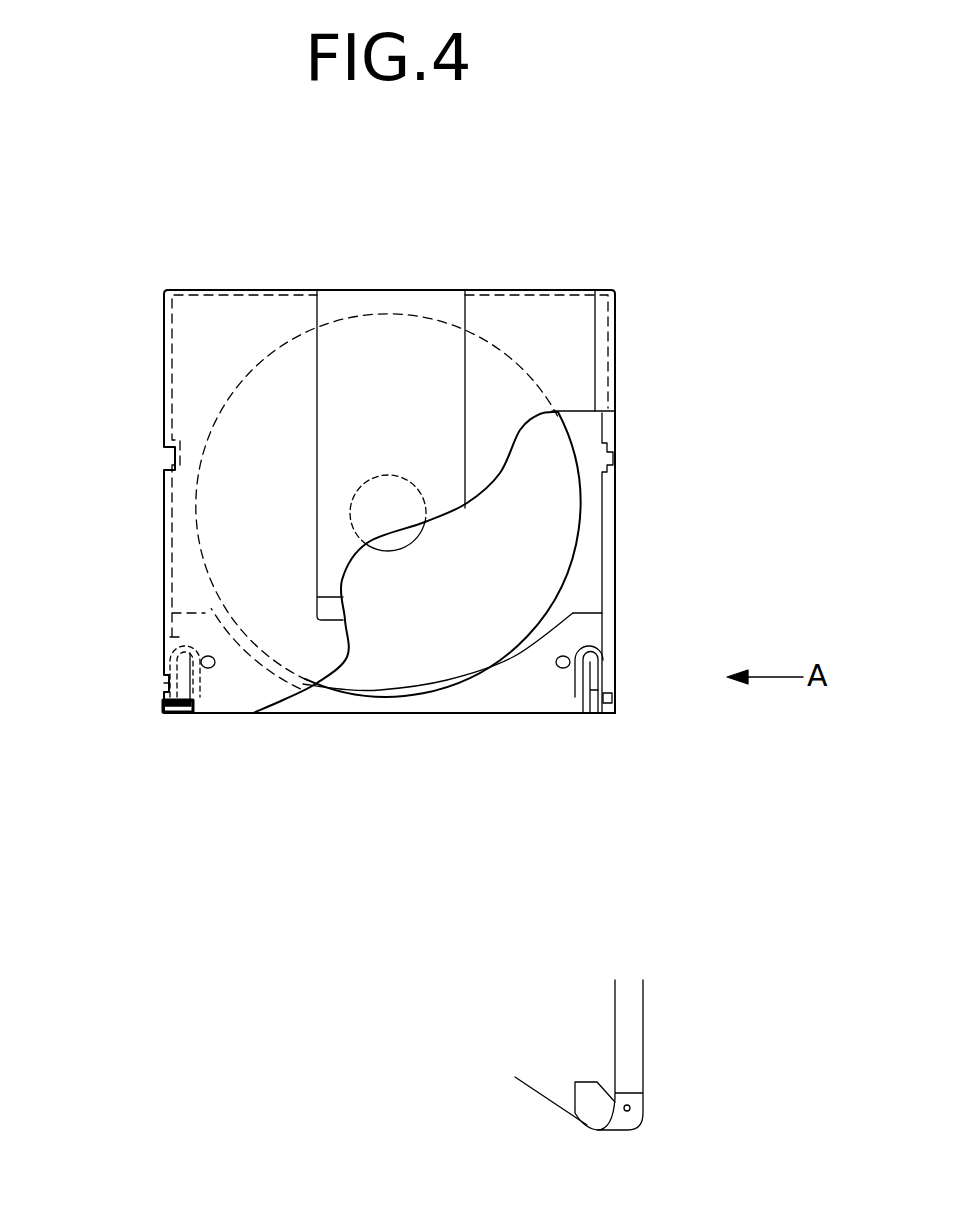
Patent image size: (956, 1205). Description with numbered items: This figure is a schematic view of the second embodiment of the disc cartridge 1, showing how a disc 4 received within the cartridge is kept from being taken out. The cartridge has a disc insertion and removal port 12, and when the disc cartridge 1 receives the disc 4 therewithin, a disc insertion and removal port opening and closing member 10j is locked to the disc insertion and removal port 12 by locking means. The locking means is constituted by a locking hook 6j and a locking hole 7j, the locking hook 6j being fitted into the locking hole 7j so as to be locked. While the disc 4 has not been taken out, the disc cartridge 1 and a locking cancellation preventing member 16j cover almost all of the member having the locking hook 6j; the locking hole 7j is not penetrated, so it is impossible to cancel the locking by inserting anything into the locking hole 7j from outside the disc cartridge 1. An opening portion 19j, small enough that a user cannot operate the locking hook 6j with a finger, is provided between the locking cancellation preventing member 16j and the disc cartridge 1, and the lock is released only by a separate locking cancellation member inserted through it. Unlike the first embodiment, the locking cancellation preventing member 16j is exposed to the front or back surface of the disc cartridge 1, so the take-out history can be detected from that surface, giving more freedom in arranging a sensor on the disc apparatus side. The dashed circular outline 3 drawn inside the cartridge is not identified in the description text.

The disc cartridge 1 is at (205, 343).
The disc 3 is at (400, 312).
The disc 4 is at (550, 531).
The locking hook 6j is at (163, 683).
The locking hole 7j is at (165, 677).
The disc insertion and removal port opening and closing member 10j is at (383, 703).
The disc insertion and removal port 12 is at (483, 715).
The locking cancellation preventing member 16j is at (172, 708).
The opening portion 19j is at (157, 705).